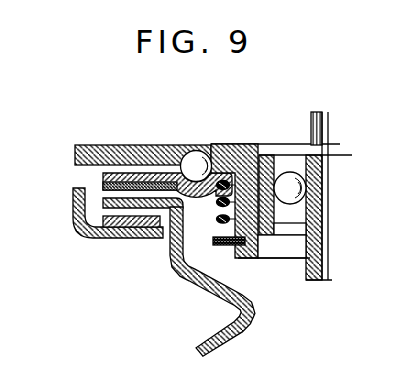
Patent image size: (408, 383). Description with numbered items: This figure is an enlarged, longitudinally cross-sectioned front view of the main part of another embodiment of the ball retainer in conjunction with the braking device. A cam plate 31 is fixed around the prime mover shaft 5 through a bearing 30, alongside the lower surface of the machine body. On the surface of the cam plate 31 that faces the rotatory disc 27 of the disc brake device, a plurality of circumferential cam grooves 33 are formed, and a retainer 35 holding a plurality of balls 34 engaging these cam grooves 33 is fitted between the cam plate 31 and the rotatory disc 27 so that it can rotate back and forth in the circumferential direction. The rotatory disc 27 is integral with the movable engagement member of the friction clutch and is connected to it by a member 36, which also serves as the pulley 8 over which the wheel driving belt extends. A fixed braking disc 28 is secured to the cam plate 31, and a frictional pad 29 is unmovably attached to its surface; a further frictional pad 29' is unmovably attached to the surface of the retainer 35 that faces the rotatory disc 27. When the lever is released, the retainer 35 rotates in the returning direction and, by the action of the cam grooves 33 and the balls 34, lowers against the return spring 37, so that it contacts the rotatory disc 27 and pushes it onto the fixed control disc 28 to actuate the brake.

The prime mover shaft 5 is at (309, 119).
The pulley 8 is at (202, 281).
The rotatory disc 27 is at (105, 199).
The fixed braking disc 28 is at (89, 240).
The frictional pad 29 is at (131, 243).
The frictional pad 29' is at (102, 171).
The bearing 30 is at (311, 214).
The cam plate 31 is at (107, 150).
The cam grooves 33 is at (186, 150).
The balls 34 is at (211, 147).
The retainer 35 is at (132, 172).
The connecting member 36 is at (202, 340).
The return spring 37 is at (218, 222).